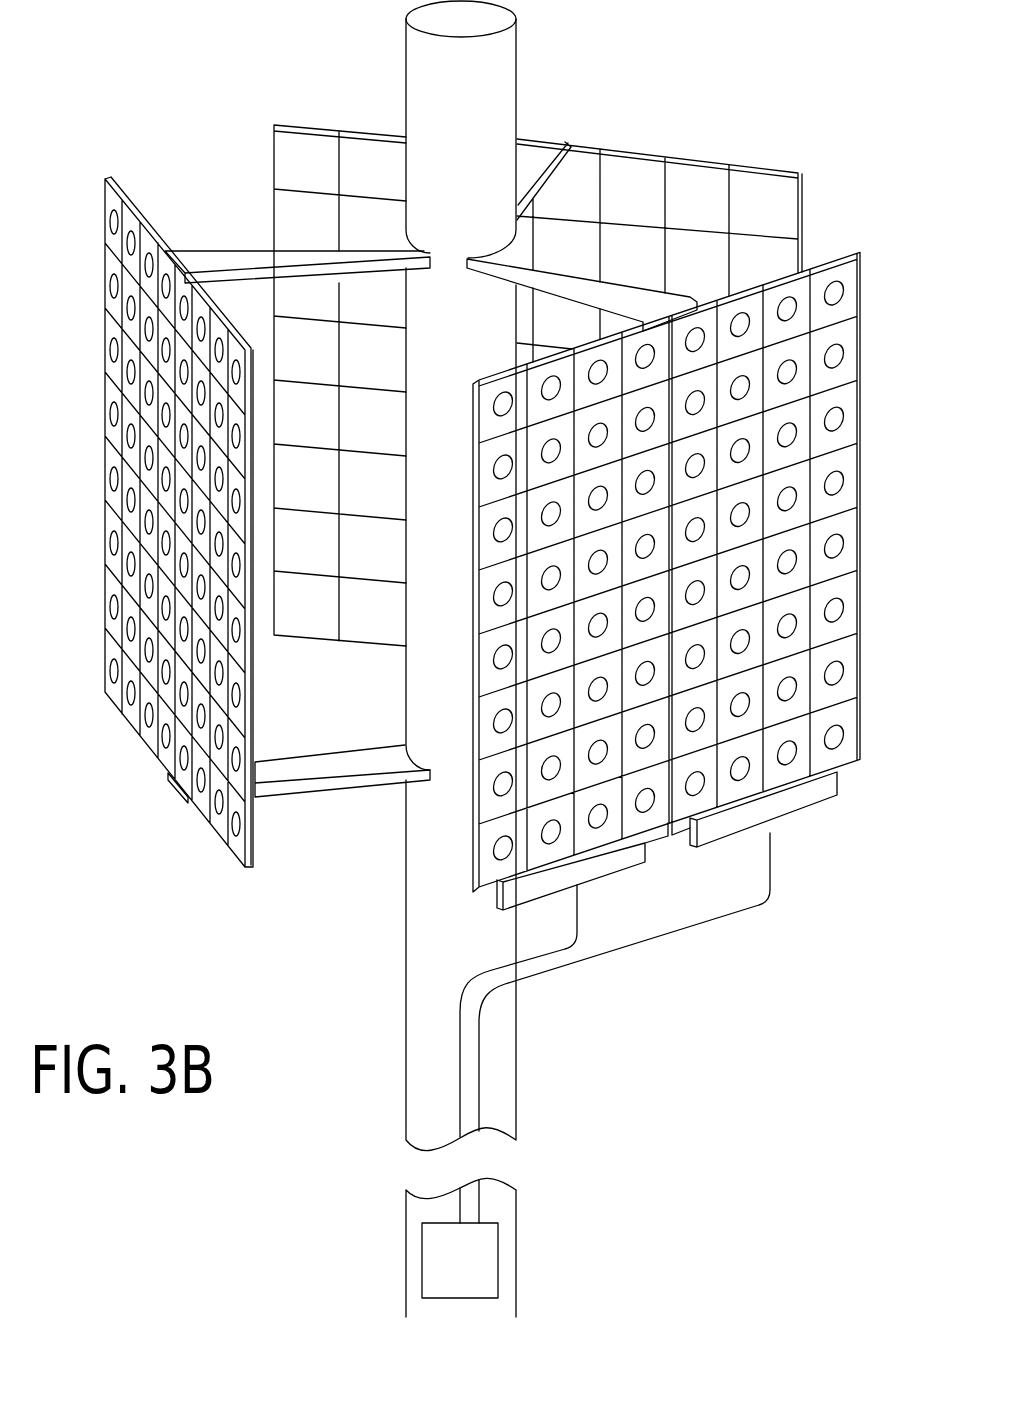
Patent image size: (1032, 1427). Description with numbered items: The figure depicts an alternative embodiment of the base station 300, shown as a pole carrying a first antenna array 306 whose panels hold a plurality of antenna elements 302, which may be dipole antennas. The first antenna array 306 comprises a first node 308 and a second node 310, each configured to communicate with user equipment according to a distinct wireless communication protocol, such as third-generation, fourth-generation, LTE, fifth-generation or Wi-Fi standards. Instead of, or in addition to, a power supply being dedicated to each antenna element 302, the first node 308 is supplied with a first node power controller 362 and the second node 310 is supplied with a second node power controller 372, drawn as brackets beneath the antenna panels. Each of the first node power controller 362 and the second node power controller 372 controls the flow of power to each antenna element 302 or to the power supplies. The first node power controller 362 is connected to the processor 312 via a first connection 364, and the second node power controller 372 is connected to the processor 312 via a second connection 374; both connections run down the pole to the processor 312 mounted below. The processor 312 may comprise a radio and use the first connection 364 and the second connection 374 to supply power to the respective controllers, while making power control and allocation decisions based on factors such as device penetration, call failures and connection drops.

The base station 300 is at (508, 659).
The antenna 302 is at (497, 727).
The first antenna array 306 is at (669, 997).
The first node 308 is at (598, 1028).
The second node 310 is at (704, 845).
The processor 312 is at (364, 1258).
The first node power controller 362 is at (620, 872).
The first connection 364 is at (463, 997).
The second node power controller 372 is at (817, 807).
The second connection 374 is at (702, 928).